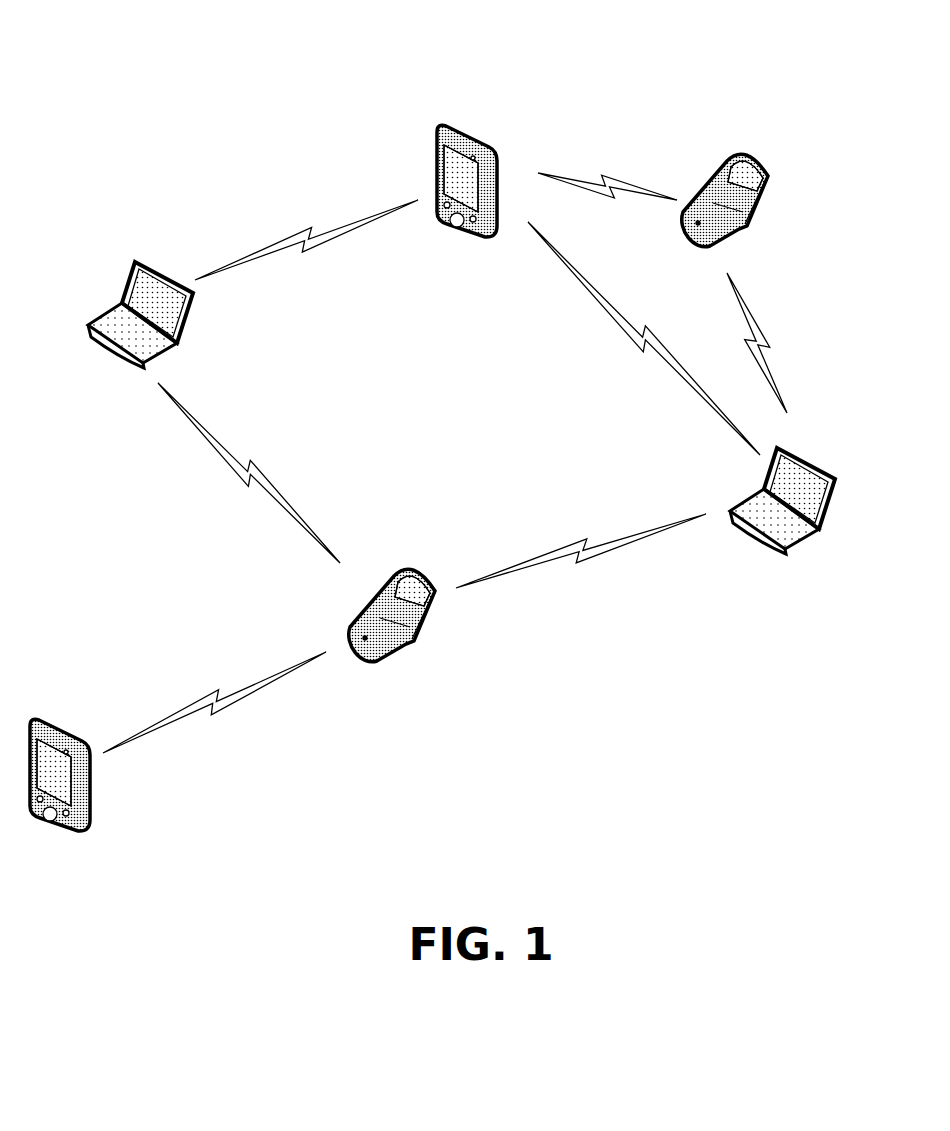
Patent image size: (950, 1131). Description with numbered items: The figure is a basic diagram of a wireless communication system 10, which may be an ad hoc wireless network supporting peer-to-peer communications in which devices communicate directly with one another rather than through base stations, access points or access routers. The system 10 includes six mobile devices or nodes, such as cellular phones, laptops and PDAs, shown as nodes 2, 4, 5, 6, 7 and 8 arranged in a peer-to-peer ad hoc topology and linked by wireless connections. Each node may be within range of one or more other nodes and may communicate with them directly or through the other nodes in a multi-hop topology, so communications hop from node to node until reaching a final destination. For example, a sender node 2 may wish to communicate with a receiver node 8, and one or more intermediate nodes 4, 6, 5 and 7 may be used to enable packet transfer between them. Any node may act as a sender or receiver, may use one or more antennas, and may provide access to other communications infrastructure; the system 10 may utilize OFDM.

The wireless communication system 10 is at (134, 44).
The sender node 2 is at (749, 155).
The intermediate node 4 is at (495, 152).
The intermediate node 5 is at (798, 458).
The intermediate node 6 is at (126, 280).
The intermediate node 7 is at (410, 644).
The receiver node 8 is at (86, 822).